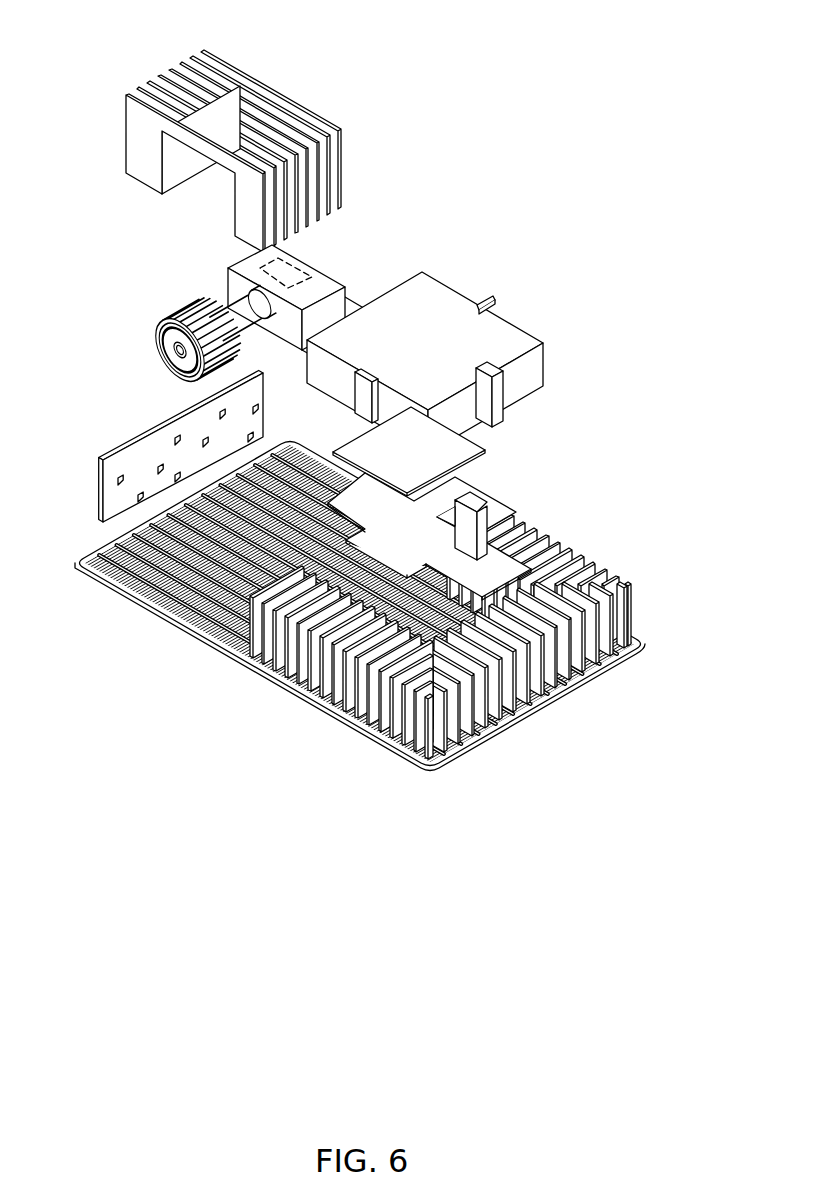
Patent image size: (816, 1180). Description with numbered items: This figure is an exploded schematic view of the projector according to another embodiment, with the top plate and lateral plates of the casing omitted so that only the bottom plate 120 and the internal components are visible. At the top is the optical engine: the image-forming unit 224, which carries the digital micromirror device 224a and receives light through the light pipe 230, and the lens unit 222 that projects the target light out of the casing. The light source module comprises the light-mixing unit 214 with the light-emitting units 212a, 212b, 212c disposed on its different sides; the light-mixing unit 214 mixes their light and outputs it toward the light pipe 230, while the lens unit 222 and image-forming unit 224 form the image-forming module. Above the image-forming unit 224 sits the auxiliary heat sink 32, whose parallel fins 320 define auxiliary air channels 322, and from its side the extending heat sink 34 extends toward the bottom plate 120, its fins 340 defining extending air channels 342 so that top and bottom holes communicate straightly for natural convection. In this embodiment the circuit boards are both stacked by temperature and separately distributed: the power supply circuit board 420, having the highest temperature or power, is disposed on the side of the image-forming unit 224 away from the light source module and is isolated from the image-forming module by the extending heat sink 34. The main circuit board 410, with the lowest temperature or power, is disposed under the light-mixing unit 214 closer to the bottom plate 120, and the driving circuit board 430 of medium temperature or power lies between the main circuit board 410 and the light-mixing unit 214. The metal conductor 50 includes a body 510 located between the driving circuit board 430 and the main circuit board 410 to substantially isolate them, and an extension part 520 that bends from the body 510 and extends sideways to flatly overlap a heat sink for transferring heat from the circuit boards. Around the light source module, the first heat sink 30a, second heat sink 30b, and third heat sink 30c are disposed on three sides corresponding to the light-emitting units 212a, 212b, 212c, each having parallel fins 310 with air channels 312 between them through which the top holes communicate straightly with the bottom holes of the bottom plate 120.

The extending heat sink 34 is at (203, 136).
The auxiliary heat sink 32 is at (182, 133).
The fins 320 is at (218, 127).
The auxiliary air channels 322 is at (257, 120).
The fins 340 is at (188, 68).
The extending air channels 342 is at (158, 98).
The image-forming unit 224 is at (287, 279).
The digital micromirror device 224a is at (290, 262).
The light pipe 230 is at (360, 288).
The lens unit 222 is at (190, 320).
The light-mixing unit 214 is at (461, 344).
The light-emitting unit 212a is at (488, 300).
The light-emitting unit 212b is at (492, 393).
The light-emitting unit 212c is at (356, 385).
The power supply circuit board 420 is at (170, 425).
The driving circuit board 430 is at (460, 448).
The main circuit board 410 is at (335, 600).
The bottom plate 120 is at (360, 606).
The metal conductor 50 is at (463, 526).
The body 510 is at (448, 498).
The extension part 520 is at (462, 533).
The first heat sink 30a is at (595, 590).
The second heat sink 30b is at (451, 643).
The third heat sink 30c is at (355, 720).
The fins 310 is at (445, 635).
The air channels 312 is at (588, 556).